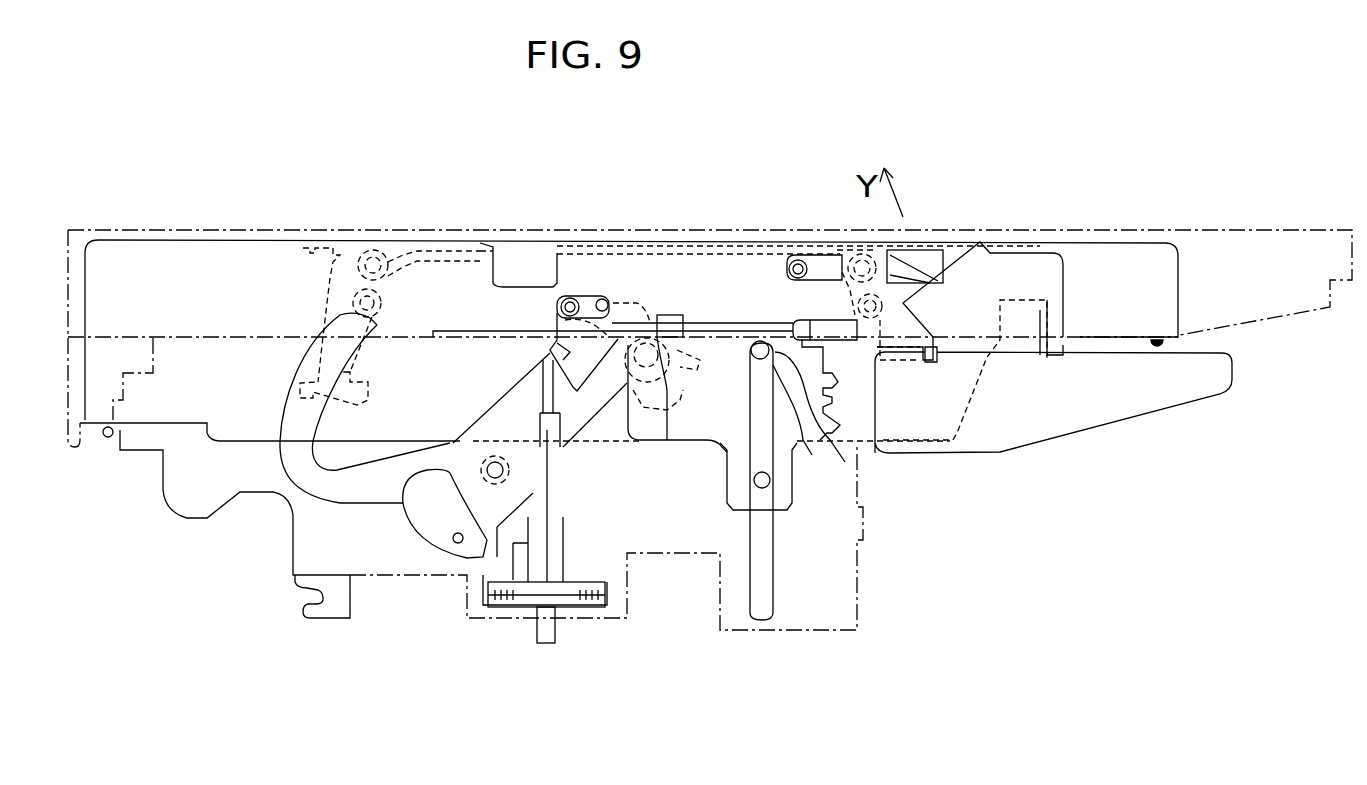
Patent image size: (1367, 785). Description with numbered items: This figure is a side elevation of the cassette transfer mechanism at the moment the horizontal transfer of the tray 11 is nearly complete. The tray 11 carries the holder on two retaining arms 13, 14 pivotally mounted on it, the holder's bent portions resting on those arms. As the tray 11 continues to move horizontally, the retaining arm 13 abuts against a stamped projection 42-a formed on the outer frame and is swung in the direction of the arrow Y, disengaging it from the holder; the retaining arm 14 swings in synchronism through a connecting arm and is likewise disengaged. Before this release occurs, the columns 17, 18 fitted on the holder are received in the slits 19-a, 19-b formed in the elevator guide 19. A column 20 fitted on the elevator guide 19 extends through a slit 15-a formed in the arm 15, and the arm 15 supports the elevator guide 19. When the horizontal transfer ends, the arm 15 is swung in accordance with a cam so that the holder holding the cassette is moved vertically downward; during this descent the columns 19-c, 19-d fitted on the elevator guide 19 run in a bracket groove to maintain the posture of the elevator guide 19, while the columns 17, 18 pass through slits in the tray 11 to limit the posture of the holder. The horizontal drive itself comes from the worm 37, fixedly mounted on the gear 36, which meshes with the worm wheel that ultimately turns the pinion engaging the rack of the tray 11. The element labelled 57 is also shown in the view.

The tray 11 is at (1100, 243).
The retaining arm 13 is at (912, 250).
The retaining arm 14 is at (350, 258).
The arm 15 is at (507, 410).
The slit 15-a is at (661, 440).
The column 17 is at (572, 296).
The column 18 is at (800, 255).
The elevator guide 19 is at (790, 490).
The slit 19-a is at (604, 300).
The slit 19-b is at (833, 318).
The column 19-c is at (845, 462).
The column 19-d is at (773, 483).
The column 20 is at (648, 342).
The gear 36 is at (567, 605).
The worm 37 is at (560, 500).
The stamped projection 42-a is at (957, 245).
The top rail 57 is at (522, 247).